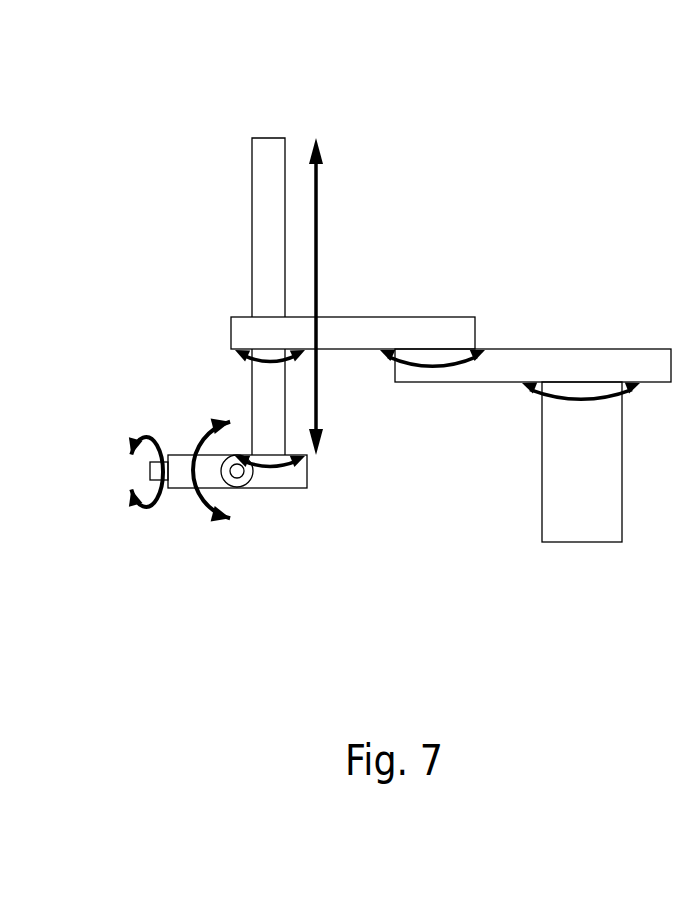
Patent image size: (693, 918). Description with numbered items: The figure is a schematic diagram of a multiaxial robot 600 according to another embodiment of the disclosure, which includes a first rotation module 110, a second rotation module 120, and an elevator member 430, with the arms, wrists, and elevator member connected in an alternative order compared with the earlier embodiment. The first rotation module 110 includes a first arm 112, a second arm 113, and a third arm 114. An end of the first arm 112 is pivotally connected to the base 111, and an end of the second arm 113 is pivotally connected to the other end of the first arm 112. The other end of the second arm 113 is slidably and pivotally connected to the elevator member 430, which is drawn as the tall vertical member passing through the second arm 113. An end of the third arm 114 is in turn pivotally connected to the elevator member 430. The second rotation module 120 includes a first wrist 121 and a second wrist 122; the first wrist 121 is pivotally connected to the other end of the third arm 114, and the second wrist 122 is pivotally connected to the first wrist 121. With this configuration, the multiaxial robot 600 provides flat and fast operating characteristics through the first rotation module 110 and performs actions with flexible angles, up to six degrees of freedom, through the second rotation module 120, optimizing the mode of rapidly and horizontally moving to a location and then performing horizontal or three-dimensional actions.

The multiaxial robot 600 is at (110, 38).
The elevator member 430 is at (268, 190).
The first rotation module 110 is at (419, 480).
The base 111 is at (562, 482).
The first arm 112 is at (455, 368).
The second arm 113 is at (351, 330).
The third arm 114 is at (255, 524).
The second rotation module 120 is at (164, 403).
The first wrist 121 is at (182, 466).
The second wrist 122 is at (136, 426).